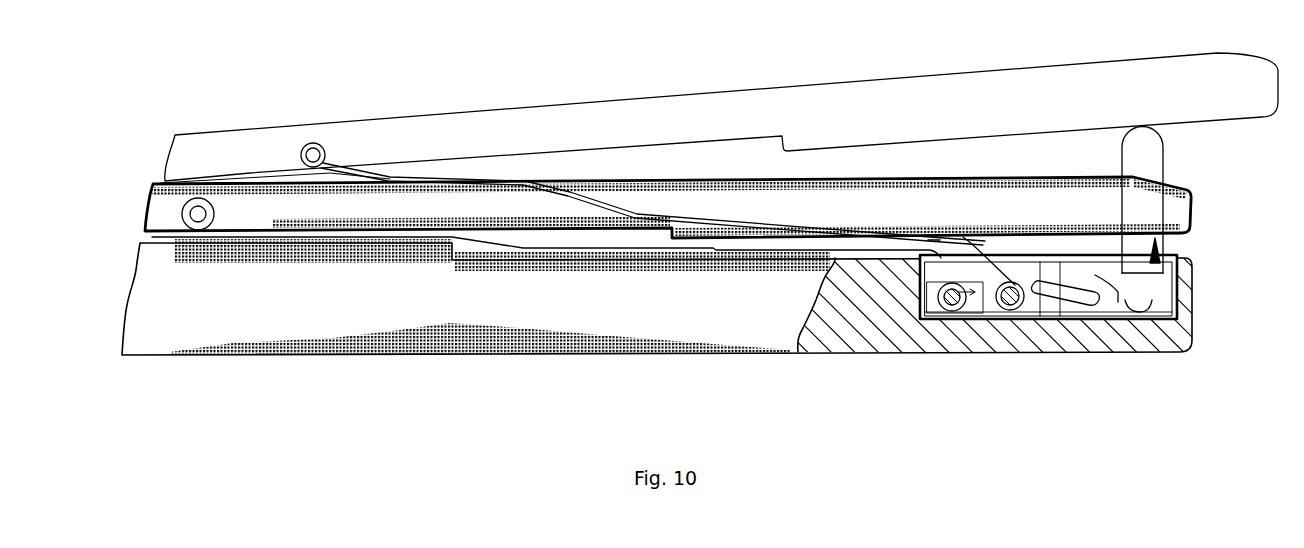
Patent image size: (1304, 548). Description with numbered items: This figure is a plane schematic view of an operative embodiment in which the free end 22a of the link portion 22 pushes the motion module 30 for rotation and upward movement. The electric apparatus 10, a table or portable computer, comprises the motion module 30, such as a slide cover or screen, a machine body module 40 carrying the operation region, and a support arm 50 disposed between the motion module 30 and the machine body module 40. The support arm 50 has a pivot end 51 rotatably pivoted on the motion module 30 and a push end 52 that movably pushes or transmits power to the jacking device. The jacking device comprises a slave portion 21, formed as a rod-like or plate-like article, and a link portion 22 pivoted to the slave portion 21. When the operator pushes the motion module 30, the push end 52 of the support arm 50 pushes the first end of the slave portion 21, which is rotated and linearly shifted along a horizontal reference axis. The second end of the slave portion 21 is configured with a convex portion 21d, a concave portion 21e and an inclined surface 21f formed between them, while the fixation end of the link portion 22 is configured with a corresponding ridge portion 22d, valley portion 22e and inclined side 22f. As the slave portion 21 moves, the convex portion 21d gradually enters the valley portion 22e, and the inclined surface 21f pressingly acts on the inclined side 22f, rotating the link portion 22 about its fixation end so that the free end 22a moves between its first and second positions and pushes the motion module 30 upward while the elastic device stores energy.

The electric apparatus 10 is at (531, 169).
The motion module 30 is at (672, 173).
The machine body module 40 is at (368, 358).
The support arm 50 is at (585, 252).
The pivot end 51 is at (183, 208).
The push end 52 is at (930, 240).
The slave portion 21 is at (953, 353).
The convex portion 21d is at (1027, 353).
The concave portion 21e is at (993, 230).
The inclined surface 21f is at (1037, 237).
The link portion 22 is at (1173, 352).
The free end 22a is at (1143, 152).
The ridge portion 22d is at (1063, 246).
The valley portion 22e is at (1085, 352).
The inclined side 22f is at (1063, 350).